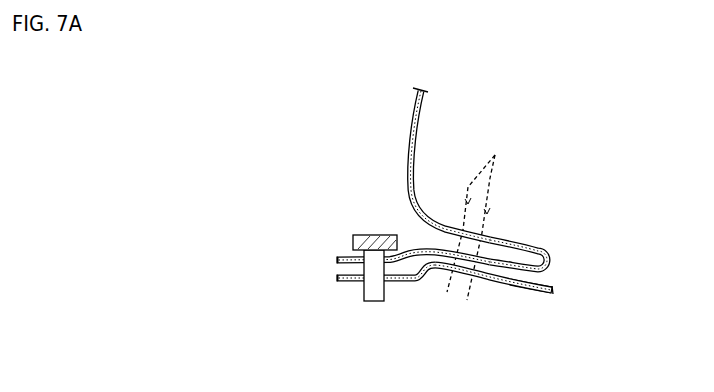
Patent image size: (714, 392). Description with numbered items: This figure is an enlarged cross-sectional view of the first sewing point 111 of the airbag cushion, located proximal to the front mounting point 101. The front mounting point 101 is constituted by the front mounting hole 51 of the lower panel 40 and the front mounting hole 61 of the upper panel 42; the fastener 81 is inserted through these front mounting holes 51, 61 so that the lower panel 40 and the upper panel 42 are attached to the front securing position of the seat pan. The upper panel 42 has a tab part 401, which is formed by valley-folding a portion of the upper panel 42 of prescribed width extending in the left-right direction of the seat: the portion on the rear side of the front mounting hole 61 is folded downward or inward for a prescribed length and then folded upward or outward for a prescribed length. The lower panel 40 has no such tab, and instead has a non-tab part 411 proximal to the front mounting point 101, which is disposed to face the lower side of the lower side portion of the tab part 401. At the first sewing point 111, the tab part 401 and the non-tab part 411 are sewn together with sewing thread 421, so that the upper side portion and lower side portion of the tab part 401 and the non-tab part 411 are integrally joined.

The first sewing point 111 is at (539, 209).
The upper panel 42 is at (404, 114).
The tab part 401 is at (536, 246).
The sewing thread 421 is at (495, 155).
The non-tab part 411 is at (498, 283).
The lower panel 40 is at (535, 290).
The front mounting point 101 is at (242, 227).
The front mounting hole 61 is at (343, 257).
The front mounting hole 51 is at (353, 285).
The fastener 81 is at (377, 288).